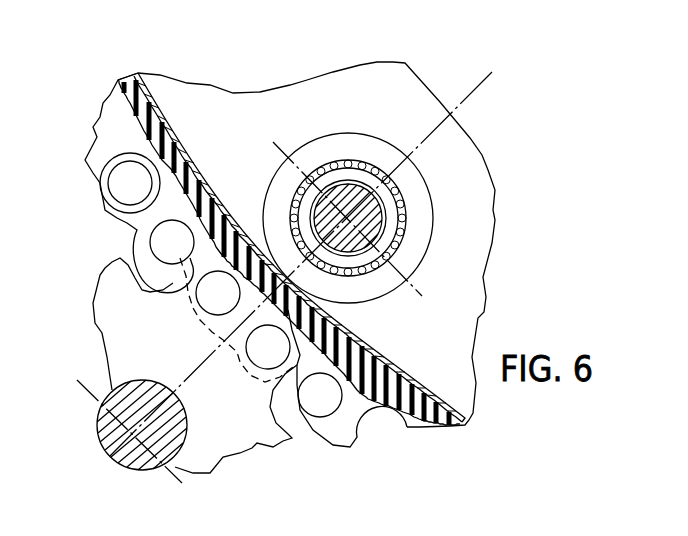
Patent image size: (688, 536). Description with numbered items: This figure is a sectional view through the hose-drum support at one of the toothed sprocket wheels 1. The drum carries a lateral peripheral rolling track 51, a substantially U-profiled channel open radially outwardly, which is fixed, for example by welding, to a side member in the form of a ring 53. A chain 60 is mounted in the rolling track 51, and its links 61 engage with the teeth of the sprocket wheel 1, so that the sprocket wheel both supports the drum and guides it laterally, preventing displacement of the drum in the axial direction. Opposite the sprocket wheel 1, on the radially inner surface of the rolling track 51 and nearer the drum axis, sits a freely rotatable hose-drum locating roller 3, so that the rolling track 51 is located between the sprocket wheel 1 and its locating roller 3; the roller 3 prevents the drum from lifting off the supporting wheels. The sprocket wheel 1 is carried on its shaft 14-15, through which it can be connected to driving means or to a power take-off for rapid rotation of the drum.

The toothed sprocket wheel 1 is at (133, 298).
The hose-drum locating roller 3 is at (323, 147).
The shaft 14-15 is at (112, 393).
The rolling track 51 is at (180, 150).
The ring 53 is at (368, 100).
The chain 60 is at (128, 182).
The link 61 is at (143, 223).